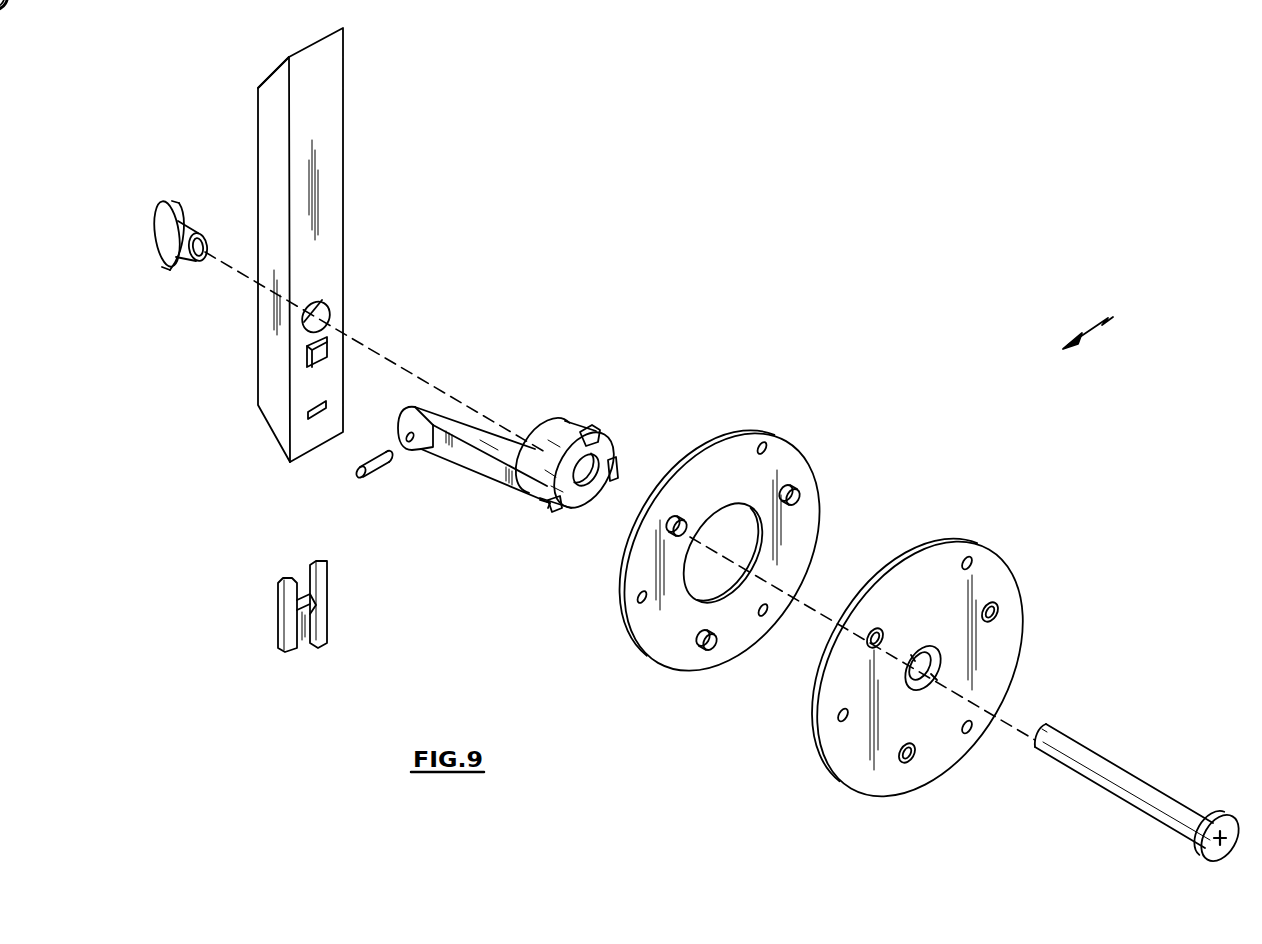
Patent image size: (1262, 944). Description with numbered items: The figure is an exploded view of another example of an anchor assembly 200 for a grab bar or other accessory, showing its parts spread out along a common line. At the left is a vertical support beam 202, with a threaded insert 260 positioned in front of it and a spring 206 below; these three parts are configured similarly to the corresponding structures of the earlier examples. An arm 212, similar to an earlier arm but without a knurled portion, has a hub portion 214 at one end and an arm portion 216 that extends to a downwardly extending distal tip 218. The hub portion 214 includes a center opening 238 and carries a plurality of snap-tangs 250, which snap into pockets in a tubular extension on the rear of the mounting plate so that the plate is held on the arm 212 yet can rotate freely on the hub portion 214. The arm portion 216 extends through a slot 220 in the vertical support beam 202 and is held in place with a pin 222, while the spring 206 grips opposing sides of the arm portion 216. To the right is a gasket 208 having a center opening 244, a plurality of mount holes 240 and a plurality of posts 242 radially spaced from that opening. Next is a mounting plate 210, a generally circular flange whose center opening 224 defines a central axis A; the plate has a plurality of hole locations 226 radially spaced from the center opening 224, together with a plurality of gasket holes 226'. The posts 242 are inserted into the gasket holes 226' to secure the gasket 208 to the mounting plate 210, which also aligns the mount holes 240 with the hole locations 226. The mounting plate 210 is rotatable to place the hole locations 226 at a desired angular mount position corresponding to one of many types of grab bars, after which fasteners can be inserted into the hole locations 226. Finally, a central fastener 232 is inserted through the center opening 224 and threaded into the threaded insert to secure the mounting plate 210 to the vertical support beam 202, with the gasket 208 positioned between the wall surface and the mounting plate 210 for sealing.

The anchor assembly 200 is at (1108, 328).
The vertical support beam 202 is at (270, 125).
The spring 206 is at (280, 612).
The gasket 208 is at (668, 672).
The mounting plate 210 is at (856, 790).
The arm 212 is at (543, 497).
The hub portion 214 is at (610, 452).
The arm portion 216 is at (497, 470).
The distal tip 218 is at (426, 430).
The slot 220 is at (306, 352).
The pin 222 is at (346, 463).
The center opening 224 is at (937, 656).
The hole locations 226 is at (917, 659).
The gasket holes 226' is at (546, 417).
The central fastener 232 is at (1157, 798).
The center opening 238 is at (583, 479).
The mount holes 240 is at (765, 447).
The posts 242 is at (802, 497).
The center opening 244 is at (735, 528).
The snap-tangs 250 is at (588, 430).
The threaded insert 260 is at (163, 206).
The central axis A is at (1013, 716).